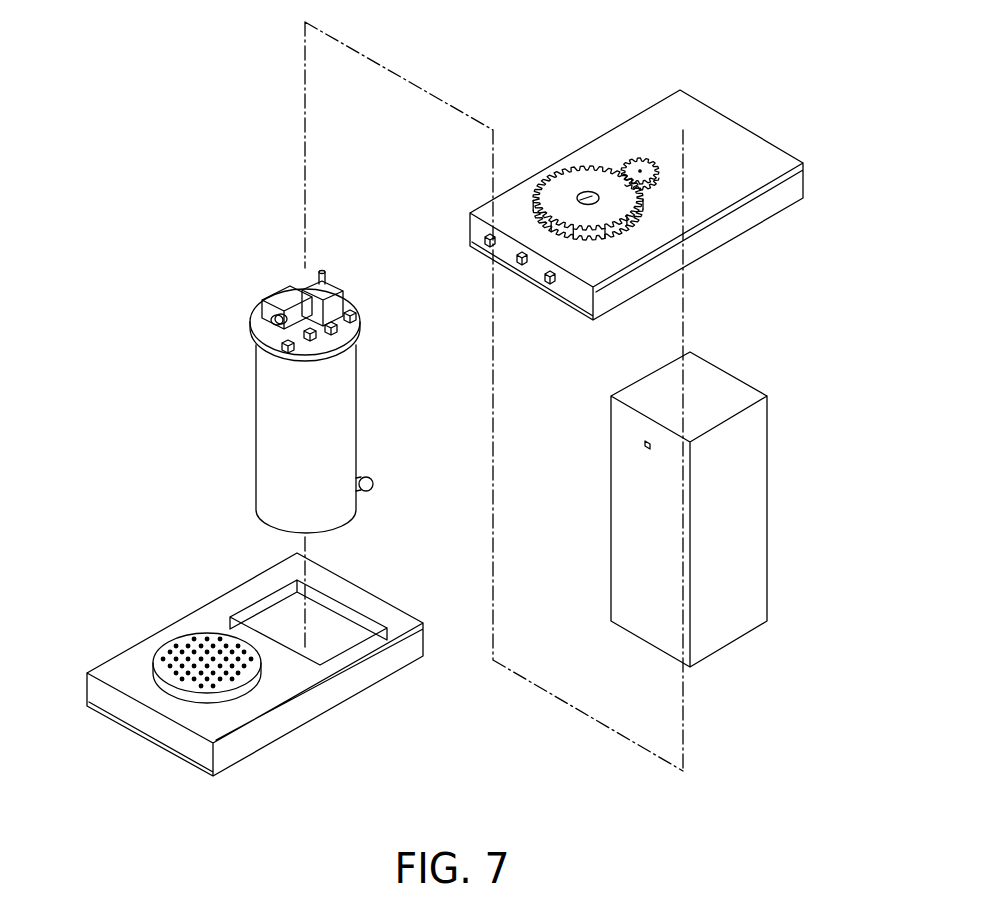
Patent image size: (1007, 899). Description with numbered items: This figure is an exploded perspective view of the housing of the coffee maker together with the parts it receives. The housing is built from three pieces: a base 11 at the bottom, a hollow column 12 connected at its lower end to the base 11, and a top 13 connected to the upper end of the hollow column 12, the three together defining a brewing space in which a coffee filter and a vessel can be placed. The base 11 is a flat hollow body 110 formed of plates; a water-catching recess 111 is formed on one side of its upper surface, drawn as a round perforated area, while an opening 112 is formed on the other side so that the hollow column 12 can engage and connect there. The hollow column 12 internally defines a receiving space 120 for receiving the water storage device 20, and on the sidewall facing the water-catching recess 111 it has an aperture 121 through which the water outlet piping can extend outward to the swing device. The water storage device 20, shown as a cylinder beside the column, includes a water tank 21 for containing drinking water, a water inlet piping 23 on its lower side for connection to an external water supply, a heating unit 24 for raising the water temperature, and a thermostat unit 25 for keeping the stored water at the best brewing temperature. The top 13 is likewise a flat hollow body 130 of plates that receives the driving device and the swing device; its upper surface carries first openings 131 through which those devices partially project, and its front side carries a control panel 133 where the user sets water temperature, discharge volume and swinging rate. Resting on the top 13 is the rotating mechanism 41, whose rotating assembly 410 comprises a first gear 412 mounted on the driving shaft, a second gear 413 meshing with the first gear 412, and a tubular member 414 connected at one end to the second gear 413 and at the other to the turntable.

The base 11 is at (258, 640).
The flat hollow body 110 is at (217, 620).
The water-catching recess 111 is at (183, 635).
The opening 112 is at (277, 617).
The hollow column 12 is at (643, 505).
The receiving space 120 is at (666, 403).
The aperture 121 is at (645, 444).
The top 13 is at (730, 117).
The flat hollow body 130 is at (788, 197).
The first openings 131 is at (650, 188).
The control panel 133 is at (486, 256).
The water storage device 20 is at (364, 377).
The water tank 21 is at (328, 440).
The water inlet piping 23 is at (368, 488).
The heating unit 24 is at (342, 327).
The thermostat unit 25 is at (351, 314).
The rotating mechanism 41 is at (530, 138).
The rotating assembly 410 is at (592, 180).
The first gear 412 is at (642, 165).
The second gear 413 is at (563, 213).
The tubular member 414 is at (578, 198).